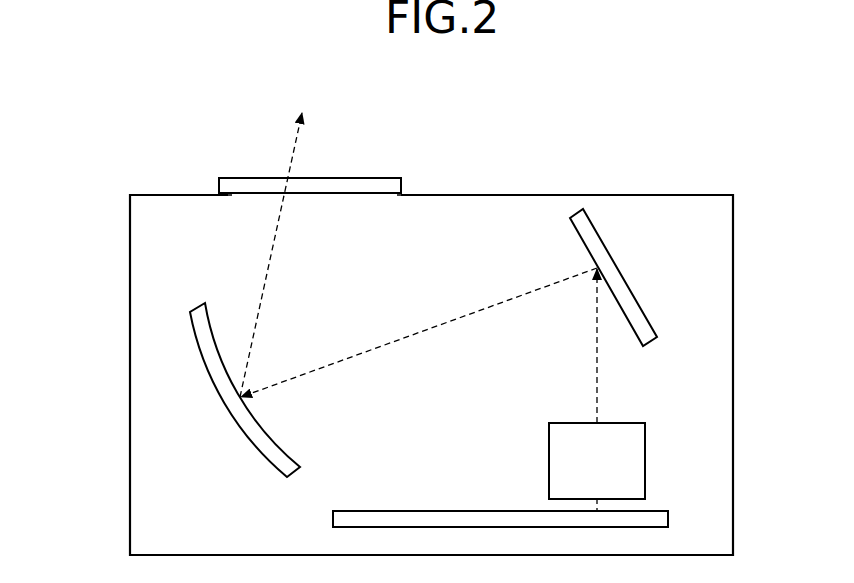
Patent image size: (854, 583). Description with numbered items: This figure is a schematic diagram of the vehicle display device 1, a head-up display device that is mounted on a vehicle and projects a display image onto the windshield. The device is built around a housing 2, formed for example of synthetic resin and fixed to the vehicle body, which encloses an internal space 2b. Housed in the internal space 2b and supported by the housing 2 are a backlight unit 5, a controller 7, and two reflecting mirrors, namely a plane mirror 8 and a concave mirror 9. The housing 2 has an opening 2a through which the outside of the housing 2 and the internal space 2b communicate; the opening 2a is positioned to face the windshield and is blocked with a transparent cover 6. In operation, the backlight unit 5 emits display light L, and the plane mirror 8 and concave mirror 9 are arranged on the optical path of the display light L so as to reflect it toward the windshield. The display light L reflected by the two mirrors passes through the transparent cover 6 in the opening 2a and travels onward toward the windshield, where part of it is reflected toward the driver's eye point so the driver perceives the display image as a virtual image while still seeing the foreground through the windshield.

The vehicle display device 1 is at (711, 150).
The housing 2 is at (667, 195).
The opening 2a is at (402, 196).
The internal space 2b is at (707, 260).
The backlight unit 5 is at (648, 443).
The transparent cover 6 is at (245, 197).
The controller 7 is at (673, 512).
The plane mirror 8 is at (600, 234).
The concave mirror 9 is at (202, 358).
The display light L is at (270, 261).